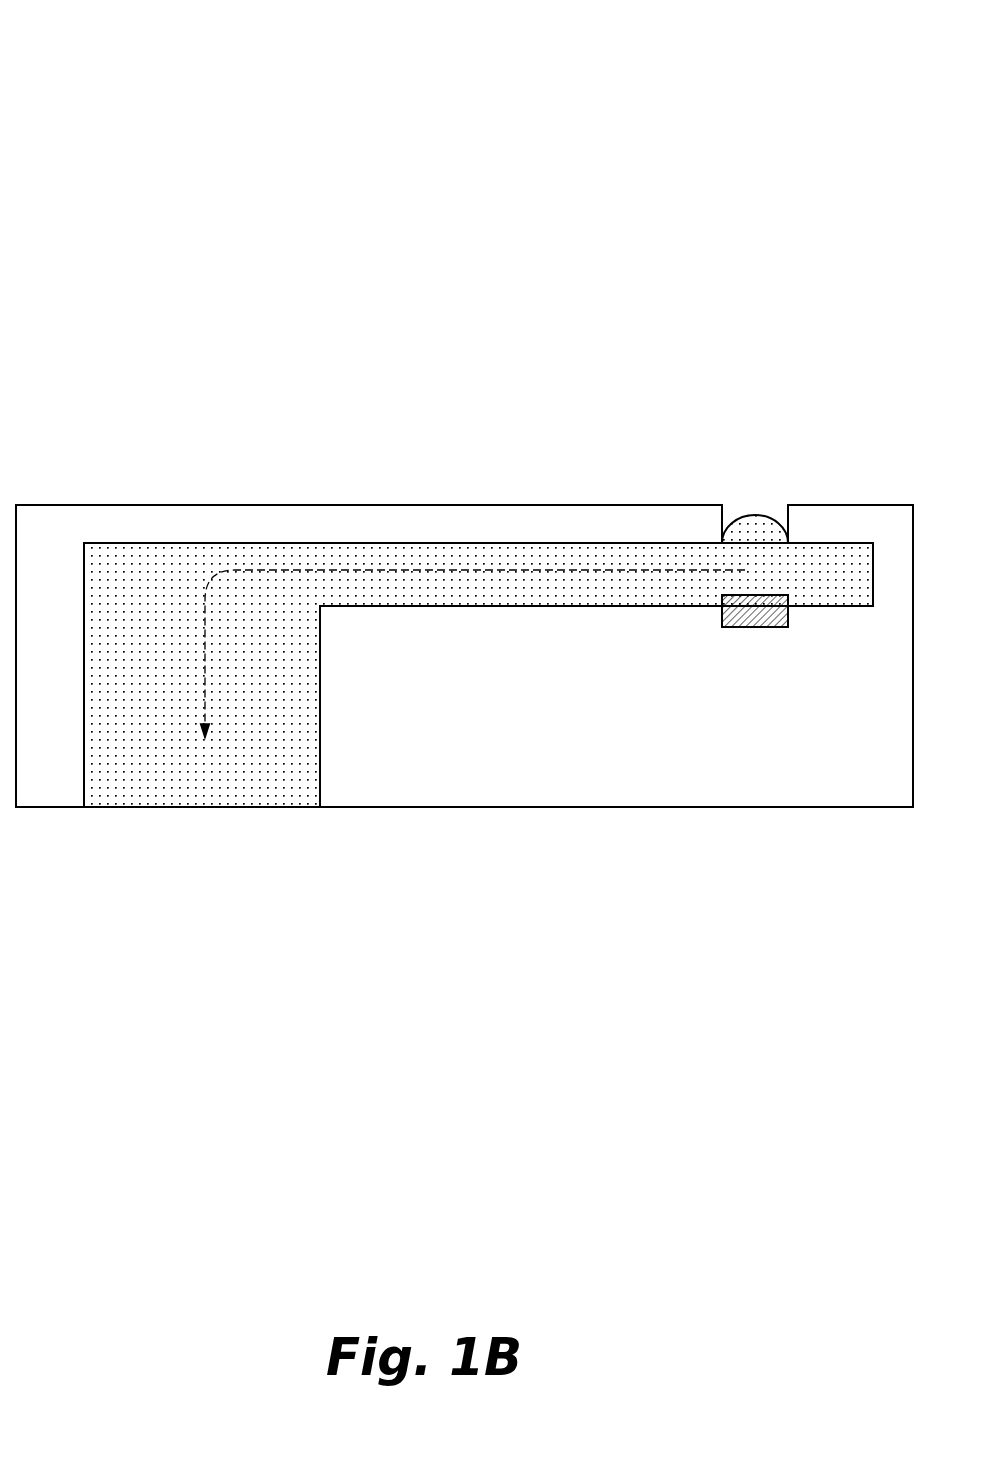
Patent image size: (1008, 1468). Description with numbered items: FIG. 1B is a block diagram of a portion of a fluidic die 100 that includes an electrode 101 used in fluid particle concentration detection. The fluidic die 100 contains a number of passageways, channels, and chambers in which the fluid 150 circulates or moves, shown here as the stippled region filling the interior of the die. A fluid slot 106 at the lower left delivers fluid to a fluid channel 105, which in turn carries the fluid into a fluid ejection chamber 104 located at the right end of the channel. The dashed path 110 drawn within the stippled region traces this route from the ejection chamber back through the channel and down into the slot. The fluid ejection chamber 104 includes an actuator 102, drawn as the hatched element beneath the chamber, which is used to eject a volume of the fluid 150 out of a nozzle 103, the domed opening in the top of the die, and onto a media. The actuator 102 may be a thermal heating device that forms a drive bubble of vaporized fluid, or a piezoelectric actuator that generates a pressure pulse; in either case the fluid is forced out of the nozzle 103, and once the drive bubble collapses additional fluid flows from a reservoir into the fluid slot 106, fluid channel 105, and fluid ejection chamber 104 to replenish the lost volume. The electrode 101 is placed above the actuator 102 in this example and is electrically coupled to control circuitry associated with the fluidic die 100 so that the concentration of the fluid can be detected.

The fluidic die 100 is at (143, 80).
The electrode 101 is at (722, 600).
The actuator 102 is at (757, 627).
The nozzle 103 is at (748, 492).
The fluid ejection chamber 104 is at (771, 561).
The fluid channel 105 is at (492, 572).
The fluid slot 106 is at (196, 786).
The flow path 110 is at (232, 572).
The fluid 150 is at (137, 612).